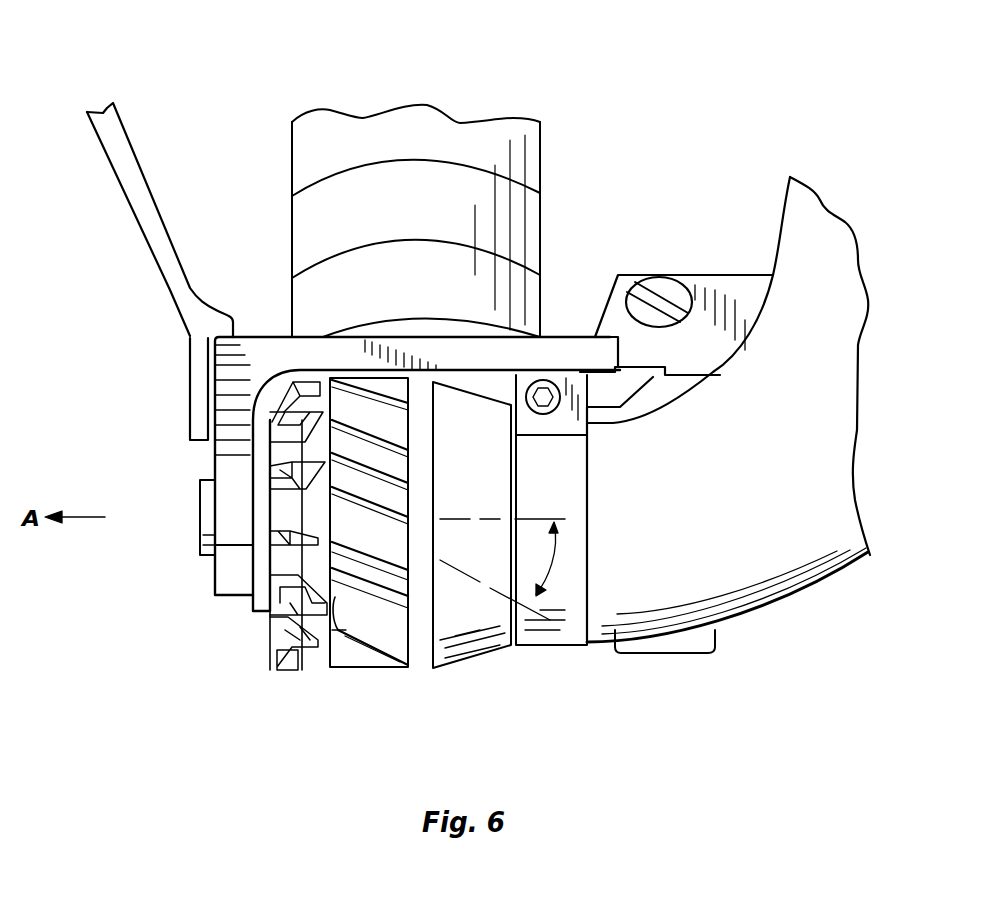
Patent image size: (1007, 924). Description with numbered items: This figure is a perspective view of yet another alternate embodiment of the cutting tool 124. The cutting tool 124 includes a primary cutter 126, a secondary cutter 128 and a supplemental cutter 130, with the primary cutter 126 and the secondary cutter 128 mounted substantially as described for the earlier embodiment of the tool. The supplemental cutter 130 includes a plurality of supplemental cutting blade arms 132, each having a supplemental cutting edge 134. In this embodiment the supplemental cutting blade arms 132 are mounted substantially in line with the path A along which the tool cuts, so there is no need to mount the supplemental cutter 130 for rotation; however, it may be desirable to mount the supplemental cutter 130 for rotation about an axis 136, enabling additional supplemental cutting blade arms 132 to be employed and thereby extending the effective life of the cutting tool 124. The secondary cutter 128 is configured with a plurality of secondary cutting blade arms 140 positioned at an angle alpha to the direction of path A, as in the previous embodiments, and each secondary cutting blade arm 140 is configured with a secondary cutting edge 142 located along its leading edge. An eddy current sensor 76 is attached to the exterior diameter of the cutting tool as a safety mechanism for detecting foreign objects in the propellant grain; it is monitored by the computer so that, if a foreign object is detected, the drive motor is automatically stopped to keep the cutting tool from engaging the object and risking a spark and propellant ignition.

The eddy current sensor 76 is at (683, 650).
The cutting tool 124 is at (233, 657).
The primary cutter 126 is at (490, 640).
The secondary cutter 128 is at (390, 668).
The supplemental cutter 130 is at (333, 652).
The supplemental cutting blade arms 132 is at (258, 602).
The supplemental cutting edge 134 is at (278, 625).
The axis 136 is at (200, 502).
The secondary cutting blade arms 140 is at (365, 617).
The secondary cutting edge 142 is at (343, 667).